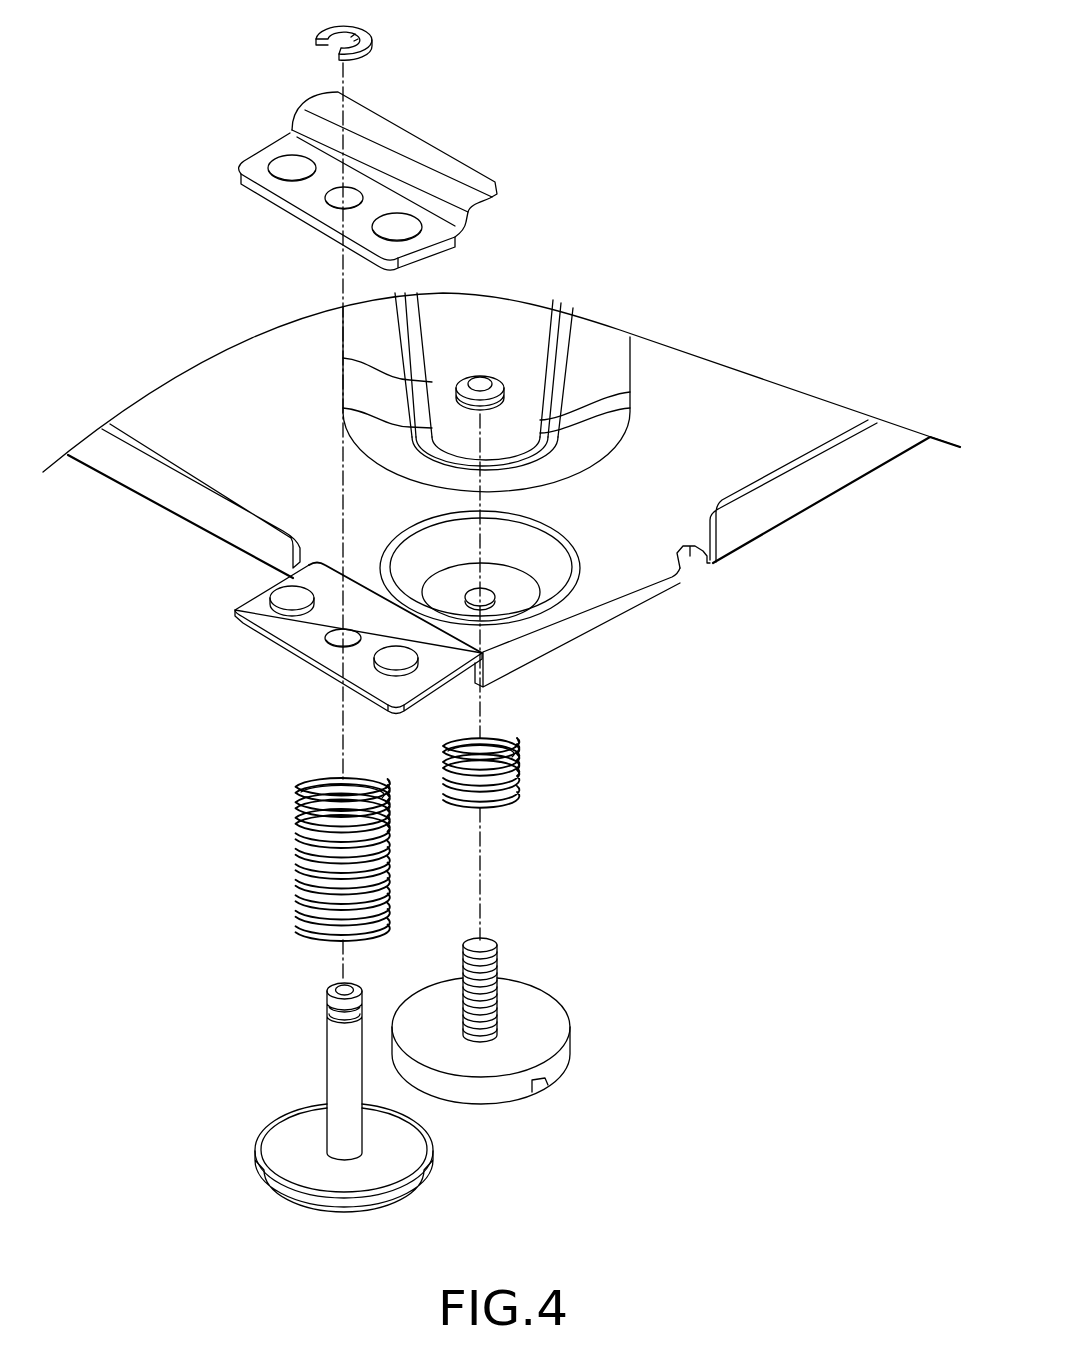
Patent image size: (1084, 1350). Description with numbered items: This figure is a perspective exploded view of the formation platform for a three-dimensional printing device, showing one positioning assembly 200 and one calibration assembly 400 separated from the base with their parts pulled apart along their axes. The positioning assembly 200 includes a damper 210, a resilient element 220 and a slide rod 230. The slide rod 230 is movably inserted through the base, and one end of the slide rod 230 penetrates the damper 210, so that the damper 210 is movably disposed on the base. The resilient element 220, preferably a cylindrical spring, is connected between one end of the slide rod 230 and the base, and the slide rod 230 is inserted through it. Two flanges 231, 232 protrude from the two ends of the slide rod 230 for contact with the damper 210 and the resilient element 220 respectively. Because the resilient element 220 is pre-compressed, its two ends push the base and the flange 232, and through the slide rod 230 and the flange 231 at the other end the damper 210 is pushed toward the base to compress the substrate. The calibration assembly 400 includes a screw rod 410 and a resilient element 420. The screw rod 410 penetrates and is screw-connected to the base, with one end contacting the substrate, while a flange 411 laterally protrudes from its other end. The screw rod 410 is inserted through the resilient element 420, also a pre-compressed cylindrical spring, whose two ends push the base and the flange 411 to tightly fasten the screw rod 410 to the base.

The positioning assembly 200 is at (132, 603).
The damper 210 is at (330, 215).
The resilient element 220 is at (296, 858).
The slide rod 230 is at (330, 1045).
The flange 231 is at (363, 30).
The flange 232 is at (425, 1182).
The calibration assembly 400 is at (630, 785).
The screw rod 410 is at (497, 1002).
The flange 411 is at (557, 1065).
The resilient element 420 is at (517, 775).